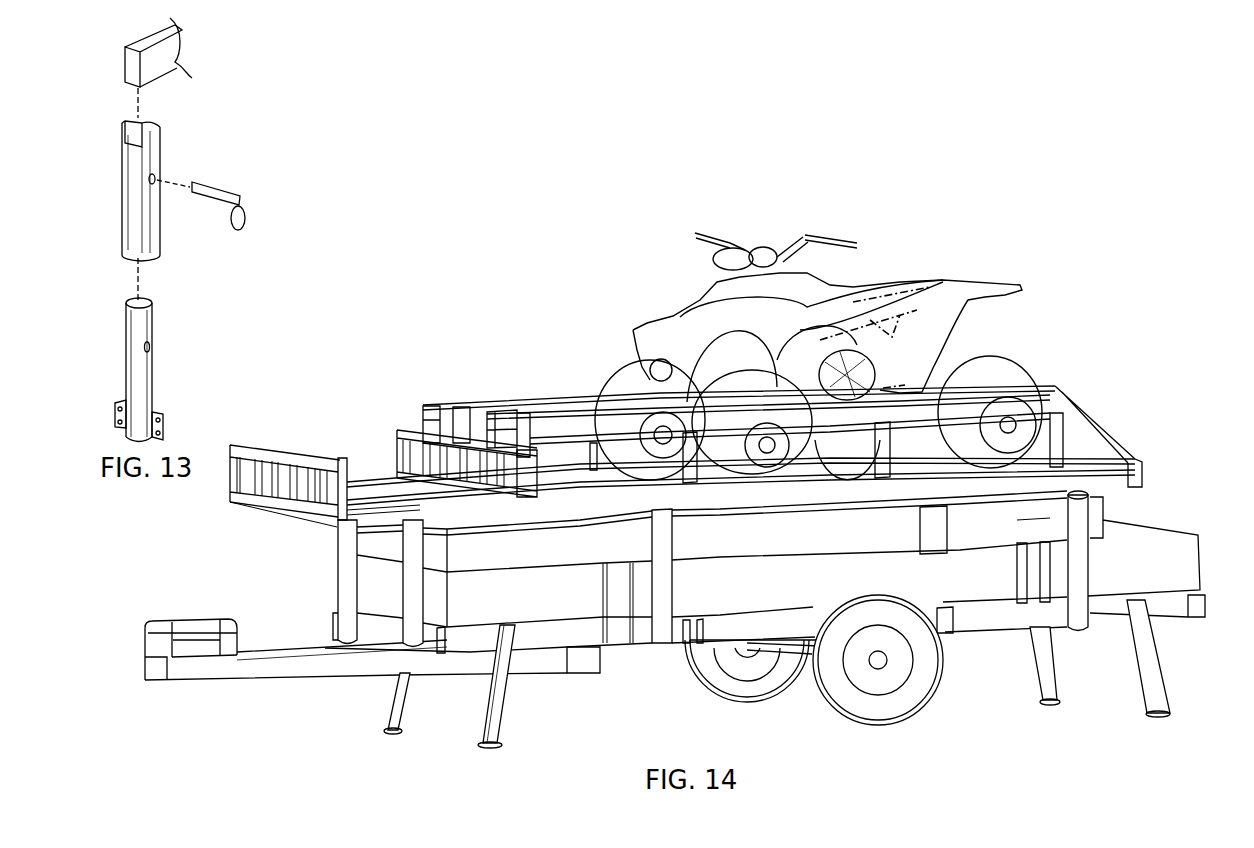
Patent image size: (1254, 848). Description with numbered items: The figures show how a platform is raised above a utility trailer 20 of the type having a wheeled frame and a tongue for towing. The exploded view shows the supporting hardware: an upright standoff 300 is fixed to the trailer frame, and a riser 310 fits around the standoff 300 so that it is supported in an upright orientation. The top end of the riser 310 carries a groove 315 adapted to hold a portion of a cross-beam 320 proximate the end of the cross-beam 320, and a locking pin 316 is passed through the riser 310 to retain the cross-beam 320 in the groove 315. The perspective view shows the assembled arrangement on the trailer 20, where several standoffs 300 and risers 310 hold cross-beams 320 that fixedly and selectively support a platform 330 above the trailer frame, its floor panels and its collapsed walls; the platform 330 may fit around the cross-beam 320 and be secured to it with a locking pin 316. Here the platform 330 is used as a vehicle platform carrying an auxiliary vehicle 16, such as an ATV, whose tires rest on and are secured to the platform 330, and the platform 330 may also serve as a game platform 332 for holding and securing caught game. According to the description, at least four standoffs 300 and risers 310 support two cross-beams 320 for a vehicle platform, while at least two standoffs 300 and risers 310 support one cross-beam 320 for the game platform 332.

In FIG. 14, the auxiliary vehicle 16 is at (855, 301).
In FIG. 14, the utility trailer 20 is at (992, 714).
In FIG. 13, the upright standoff 300 is at (135, 392).
In FIG. 13, the riser 310 is at (147, 217).
In FIG. 14, the riser 310 is at (1083, 565).
In FIG. 13, the groove 315 is at (146, 118).
In FIG. 13, the locking pin 316 is at (210, 193).
In FIG. 13, the cross-beam 320 is at (167, 58).
In FIG. 14, the cross-beam 320 is at (630, 523).
In FIG. 14, the platform 330 is at (510, 392).
In FIG. 14, the game platform 332 is at (304, 420).